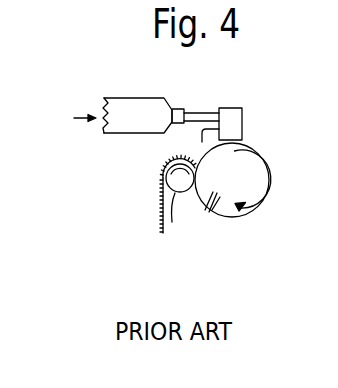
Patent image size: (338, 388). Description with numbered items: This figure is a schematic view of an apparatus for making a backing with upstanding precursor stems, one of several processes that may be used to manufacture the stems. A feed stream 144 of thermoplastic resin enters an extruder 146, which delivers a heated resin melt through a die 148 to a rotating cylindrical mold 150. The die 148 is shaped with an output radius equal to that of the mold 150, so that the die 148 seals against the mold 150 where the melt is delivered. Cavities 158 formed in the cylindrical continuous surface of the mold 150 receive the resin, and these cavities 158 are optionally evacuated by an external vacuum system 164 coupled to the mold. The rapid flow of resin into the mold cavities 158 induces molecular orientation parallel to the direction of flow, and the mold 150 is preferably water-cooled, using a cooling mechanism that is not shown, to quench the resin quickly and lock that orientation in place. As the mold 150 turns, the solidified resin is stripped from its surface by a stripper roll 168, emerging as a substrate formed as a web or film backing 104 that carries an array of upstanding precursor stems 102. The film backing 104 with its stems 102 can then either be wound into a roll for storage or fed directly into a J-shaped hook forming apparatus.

The feed stream 144 is at (69, 123).
The extruder 146 is at (137, 97).
The die 148 is at (232, 108).
The rotating cylindrical mold 150 is at (263, 156).
The cavities 158 is at (205, 210).
The external vacuum system 164 is at (203, 136).
The stripper roll 168 is at (179, 192).
The upstanding stems 102 is at (163, 233).
The film backing 104 is at (172, 222).